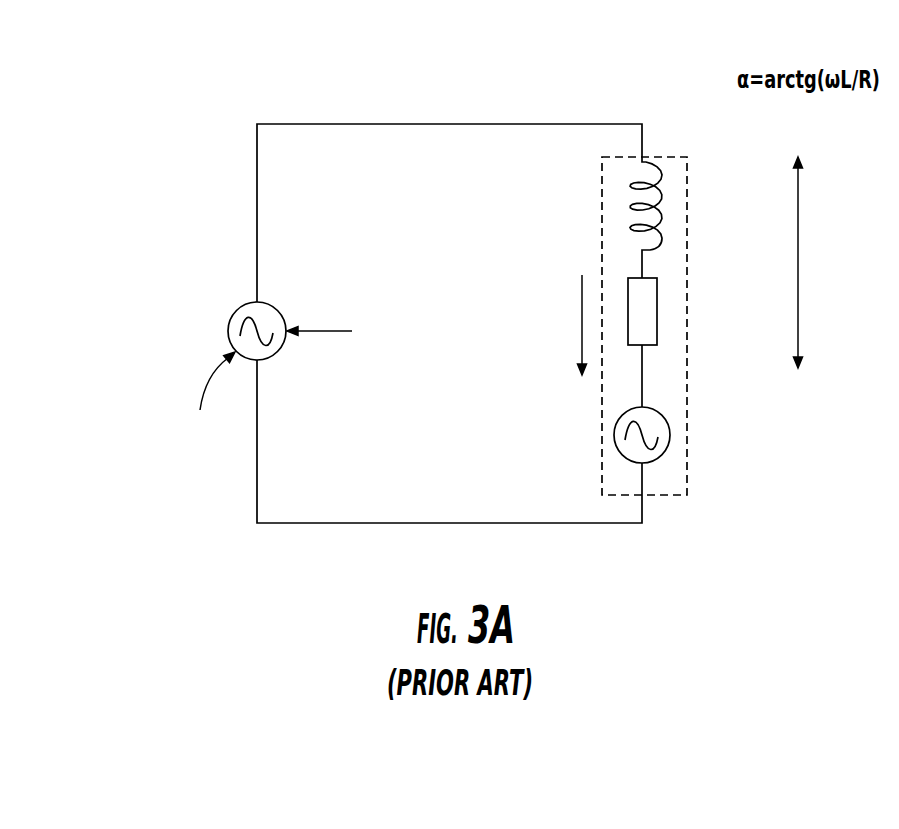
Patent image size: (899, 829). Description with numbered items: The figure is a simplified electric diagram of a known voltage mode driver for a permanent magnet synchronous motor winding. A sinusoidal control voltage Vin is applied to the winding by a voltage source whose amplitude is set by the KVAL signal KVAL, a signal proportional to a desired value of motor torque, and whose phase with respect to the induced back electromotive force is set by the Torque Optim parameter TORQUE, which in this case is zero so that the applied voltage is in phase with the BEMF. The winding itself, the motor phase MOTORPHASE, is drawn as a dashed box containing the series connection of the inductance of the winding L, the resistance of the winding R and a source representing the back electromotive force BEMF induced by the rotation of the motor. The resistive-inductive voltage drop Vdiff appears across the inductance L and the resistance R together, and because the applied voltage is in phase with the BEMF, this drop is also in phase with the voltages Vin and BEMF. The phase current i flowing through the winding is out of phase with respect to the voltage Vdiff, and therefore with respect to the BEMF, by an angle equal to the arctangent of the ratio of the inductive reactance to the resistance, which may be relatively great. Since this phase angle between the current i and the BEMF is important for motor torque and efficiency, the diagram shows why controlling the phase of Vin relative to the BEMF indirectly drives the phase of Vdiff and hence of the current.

The control voltage Vin is at (239, 331).
The KVAL signal KVAL is at (323, 318).
The Torque Optim TORQUE is at (188, 417).
The motor phase MOTORPHASE is at (600, 227).
The inductance of the winding L is at (705, 244).
The resistance of the winding R is at (705, 359).
The back electromotive force BEMF is at (705, 454).
The resistive-inductive voltage drop Vdiff is at (823, 262).
The phase current i is at (576, 325).